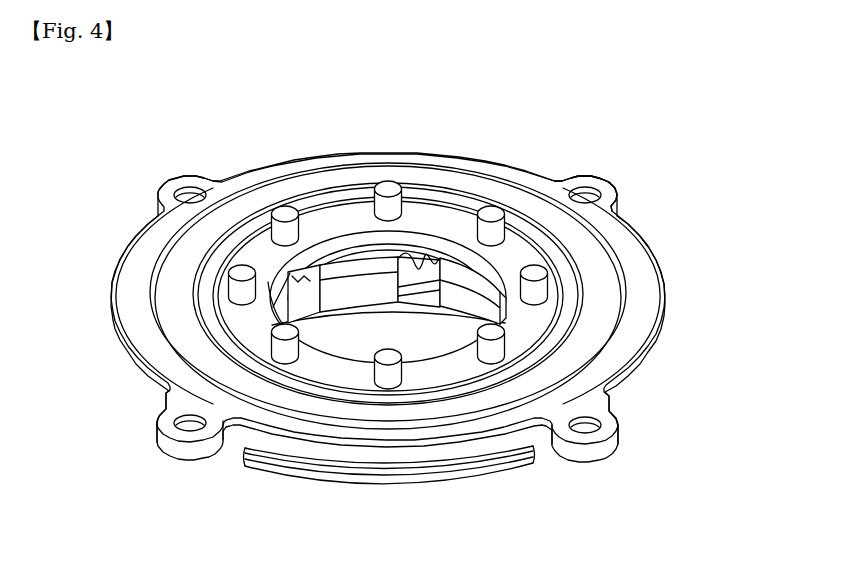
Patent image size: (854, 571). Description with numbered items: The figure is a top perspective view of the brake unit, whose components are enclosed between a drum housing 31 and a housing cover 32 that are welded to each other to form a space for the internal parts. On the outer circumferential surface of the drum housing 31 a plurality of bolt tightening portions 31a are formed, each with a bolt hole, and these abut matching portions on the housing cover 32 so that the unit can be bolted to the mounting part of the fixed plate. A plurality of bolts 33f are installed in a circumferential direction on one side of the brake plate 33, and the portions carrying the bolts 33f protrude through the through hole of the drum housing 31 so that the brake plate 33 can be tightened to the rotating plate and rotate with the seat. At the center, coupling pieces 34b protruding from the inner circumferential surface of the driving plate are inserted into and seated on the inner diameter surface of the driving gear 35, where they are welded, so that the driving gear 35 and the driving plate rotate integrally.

The drum housing 31 is at (648, 303).
The bolt tightening portion 31a is at (607, 190).
The housing cover 32 is at (354, 470).
The brake plate 33 is at (421, 383).
The bolts 33f is at (493, 352).
The coupling pieces 34b is at (352, 287).
The driving gear 35 is at (418, 280).